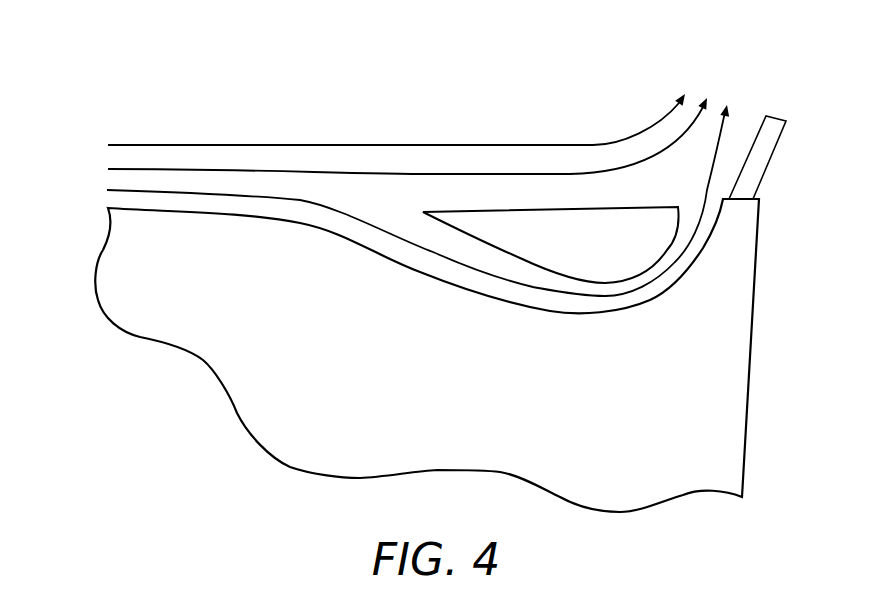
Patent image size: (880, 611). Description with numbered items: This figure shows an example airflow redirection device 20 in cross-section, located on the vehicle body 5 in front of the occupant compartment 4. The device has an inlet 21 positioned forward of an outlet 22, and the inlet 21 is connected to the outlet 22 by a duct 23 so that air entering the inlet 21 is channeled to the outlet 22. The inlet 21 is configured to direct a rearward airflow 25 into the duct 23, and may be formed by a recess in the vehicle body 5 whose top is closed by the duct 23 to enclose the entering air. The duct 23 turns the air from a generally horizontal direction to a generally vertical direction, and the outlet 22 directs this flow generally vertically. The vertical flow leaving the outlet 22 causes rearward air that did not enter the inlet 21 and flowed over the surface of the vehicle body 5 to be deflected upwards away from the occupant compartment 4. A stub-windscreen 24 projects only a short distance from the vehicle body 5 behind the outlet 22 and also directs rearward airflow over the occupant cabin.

The occupant compartment 4 is at (806, 385).
The vehicle body 5 is at (746, 292).
The airflow redirection device 20 is at (533, 125).
The inlet 21 is at (403, 222).
The outlet 22 is at (692, 207).
The duct 23 is at (606, 306).
The stub-windscreen 24 is at (782, 147).
The rearward airflow 25 is at (101, 172).